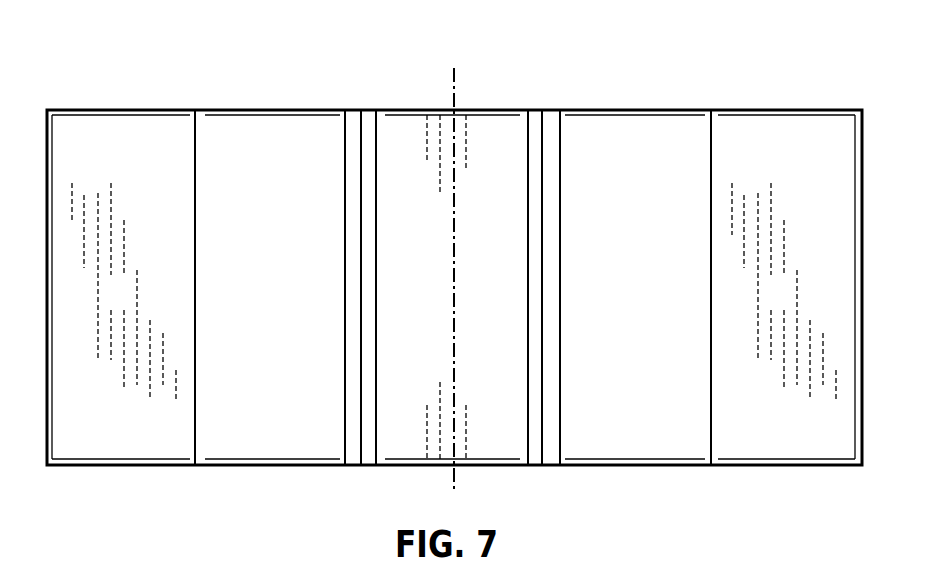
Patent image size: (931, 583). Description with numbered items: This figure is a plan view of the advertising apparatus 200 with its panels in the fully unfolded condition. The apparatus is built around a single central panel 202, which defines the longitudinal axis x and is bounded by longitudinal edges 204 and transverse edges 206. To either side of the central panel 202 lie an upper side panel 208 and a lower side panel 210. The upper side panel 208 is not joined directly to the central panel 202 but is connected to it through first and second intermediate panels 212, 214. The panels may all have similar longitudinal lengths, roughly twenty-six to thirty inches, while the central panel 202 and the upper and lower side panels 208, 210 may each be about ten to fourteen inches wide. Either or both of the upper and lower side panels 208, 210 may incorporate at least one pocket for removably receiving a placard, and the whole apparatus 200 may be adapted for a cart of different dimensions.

The advertising apparatus 200 is at (133, 99).
The central panel 202 is at (457, 307).
The longitudinal edges 204 is at (378, 138).
The transverse edges 206 is at (502, 108).
The upper side panel 208 is at (284, 307).
The lower side panel 210 is at (129, 307).
The first intermediate panel 212 is at (365, 167).
The second intermediate panel 214 is at (548, 185).